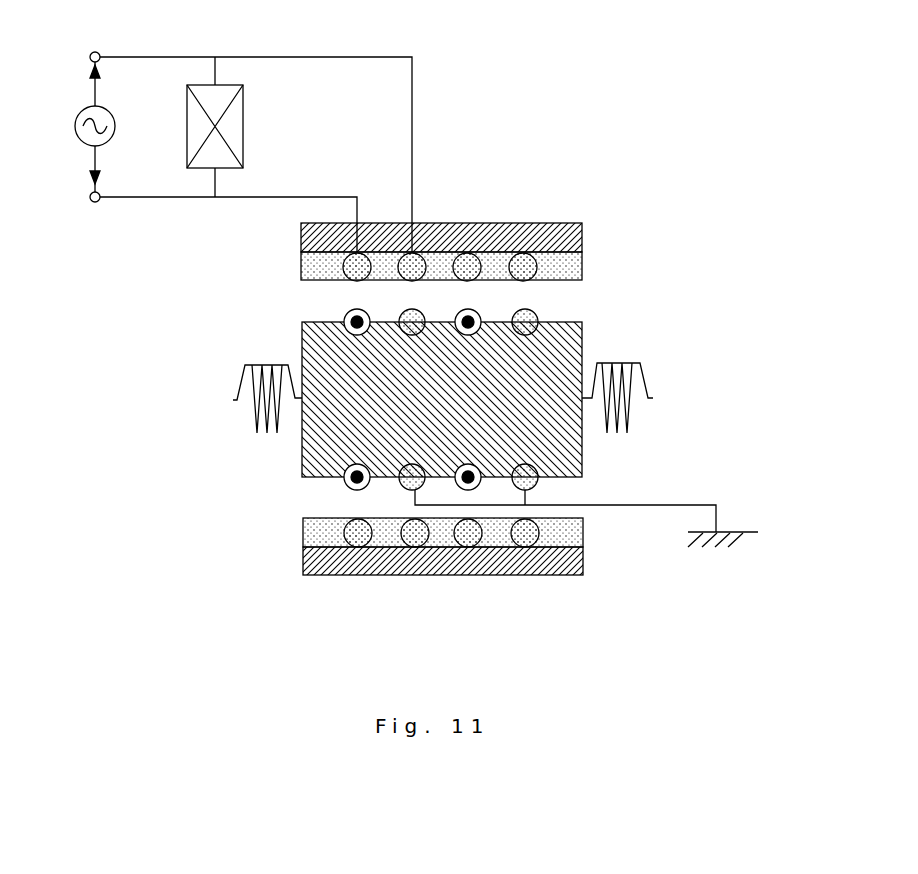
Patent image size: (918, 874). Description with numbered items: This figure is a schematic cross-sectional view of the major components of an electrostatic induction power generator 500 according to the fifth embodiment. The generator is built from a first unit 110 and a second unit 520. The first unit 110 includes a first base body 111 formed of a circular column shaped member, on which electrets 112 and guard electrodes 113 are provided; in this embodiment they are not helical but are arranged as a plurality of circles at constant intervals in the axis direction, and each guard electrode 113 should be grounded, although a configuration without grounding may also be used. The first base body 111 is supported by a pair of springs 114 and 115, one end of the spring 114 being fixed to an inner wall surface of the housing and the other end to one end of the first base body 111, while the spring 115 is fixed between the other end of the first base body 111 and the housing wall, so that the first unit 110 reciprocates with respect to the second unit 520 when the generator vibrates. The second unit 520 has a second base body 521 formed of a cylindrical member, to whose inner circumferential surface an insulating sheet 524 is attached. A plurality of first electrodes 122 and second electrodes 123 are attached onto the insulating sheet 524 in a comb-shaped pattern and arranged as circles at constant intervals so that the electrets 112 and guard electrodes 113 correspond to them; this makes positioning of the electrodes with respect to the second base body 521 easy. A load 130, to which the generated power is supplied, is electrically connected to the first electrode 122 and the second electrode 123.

The load 130 is at (230, 127).
The second electrode 123 is at (427, 264).
The first electrode 122 is at (350, 277).
The electrostatic induction power generator 500 is at (580, 138).
The second unit 520 is at (449, 193).
The first unit 110 is at (464, 453).
The first base body 111 is at (580, 466).
The electret 112 is at (347, 490).
The guard electrode 113 is at (405, 486).
The spring 114 is at (245, 380).
The spring 115 is at (658, 398).
The insulating sheet 524 is at (303, 528).
The second base body 521 is at (585, 562).